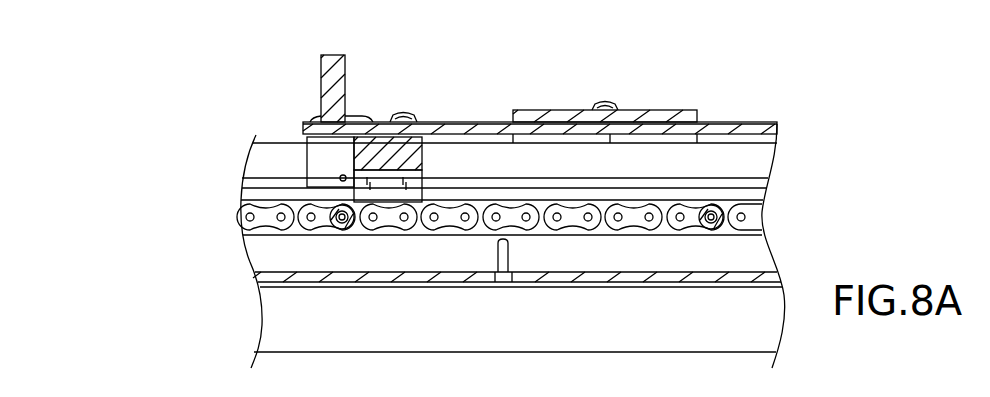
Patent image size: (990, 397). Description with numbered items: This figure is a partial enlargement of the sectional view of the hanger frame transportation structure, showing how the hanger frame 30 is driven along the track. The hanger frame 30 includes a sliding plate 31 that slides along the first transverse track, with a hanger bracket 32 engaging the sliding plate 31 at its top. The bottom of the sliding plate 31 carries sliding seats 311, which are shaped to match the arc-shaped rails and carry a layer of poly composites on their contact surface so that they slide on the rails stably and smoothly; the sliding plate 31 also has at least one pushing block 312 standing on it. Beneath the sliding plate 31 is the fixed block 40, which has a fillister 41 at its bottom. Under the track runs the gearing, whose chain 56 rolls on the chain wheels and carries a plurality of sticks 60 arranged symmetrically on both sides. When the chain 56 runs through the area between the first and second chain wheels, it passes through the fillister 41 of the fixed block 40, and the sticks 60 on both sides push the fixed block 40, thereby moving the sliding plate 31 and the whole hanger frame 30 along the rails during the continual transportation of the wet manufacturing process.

The hanger frame 30 is at (170, 57).
The sliding plate 31 is at (752, 125).
The hanger bracket 32 is at (677, 116).
The sliding seat 311 is at (317, 146).
The pushing block 312 is at (319, 82).
The fixed block 40 is at (250, 206).
The fillister 41 is at (368, 160).
The chain 56 is at (584, 235).
The stick 60 is at (343, 231).